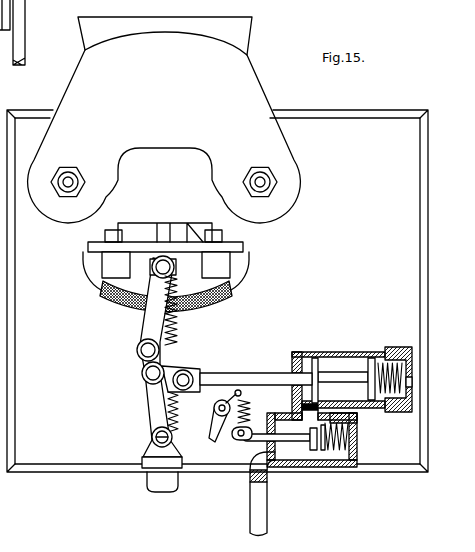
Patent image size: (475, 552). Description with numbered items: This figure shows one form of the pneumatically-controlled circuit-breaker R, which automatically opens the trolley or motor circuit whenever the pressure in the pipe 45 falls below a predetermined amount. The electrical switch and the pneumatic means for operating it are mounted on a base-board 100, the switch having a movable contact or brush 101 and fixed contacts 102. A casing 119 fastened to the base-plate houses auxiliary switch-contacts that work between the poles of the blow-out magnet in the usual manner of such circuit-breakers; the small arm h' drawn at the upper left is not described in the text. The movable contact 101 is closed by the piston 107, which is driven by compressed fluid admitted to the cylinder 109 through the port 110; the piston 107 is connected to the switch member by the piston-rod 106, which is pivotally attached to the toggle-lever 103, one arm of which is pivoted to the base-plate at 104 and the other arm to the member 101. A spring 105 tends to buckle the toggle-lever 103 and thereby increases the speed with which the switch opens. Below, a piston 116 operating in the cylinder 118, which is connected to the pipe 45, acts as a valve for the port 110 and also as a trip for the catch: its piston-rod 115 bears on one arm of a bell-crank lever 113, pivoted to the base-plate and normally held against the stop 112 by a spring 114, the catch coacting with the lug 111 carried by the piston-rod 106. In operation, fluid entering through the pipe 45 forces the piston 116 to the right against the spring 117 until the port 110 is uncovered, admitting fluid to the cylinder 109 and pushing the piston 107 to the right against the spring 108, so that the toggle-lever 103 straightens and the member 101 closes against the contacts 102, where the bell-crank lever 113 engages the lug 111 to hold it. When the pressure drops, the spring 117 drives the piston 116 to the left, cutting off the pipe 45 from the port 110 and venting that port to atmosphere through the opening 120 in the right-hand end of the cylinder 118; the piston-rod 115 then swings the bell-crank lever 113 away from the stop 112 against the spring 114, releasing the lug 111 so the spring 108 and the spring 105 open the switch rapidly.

The circuit-breaker R is at (230, 291).
The base-board 100 is at (217, 291).
The arm h' is at (27, 32).
The casing 119 is at (164, 134).
The movable contact 101 is at (204, 306).
The fixed contacts 102 is at (232, 271).
The toggle-lever 103 is at (148, 333).
The pivot 104 is at (152, 437).
The spring 105 is at (177, 352).
The piston-rod 106 is at (233, 374).
The piston 107 is at (377, 362).
The spring 108 is at (397, 350).
The cylinder 109 is at (335, 362).
The port 110 is at (304, 410).
The lug 111 is at (256, 388).
The stop 112 is at (235, 393).
The bell-crank lever 113 is at (214, 409).
The spring 114 is at (220, 430).
The piston-rod 115 is at (246, 442).
The piston 116 is at (320, 468).
The spring 117 is at (359, 422).
The cylinder 118 is at (291, 468).
The opening 120 is at (357, 439).
The pipe 45 is at (251, 518).